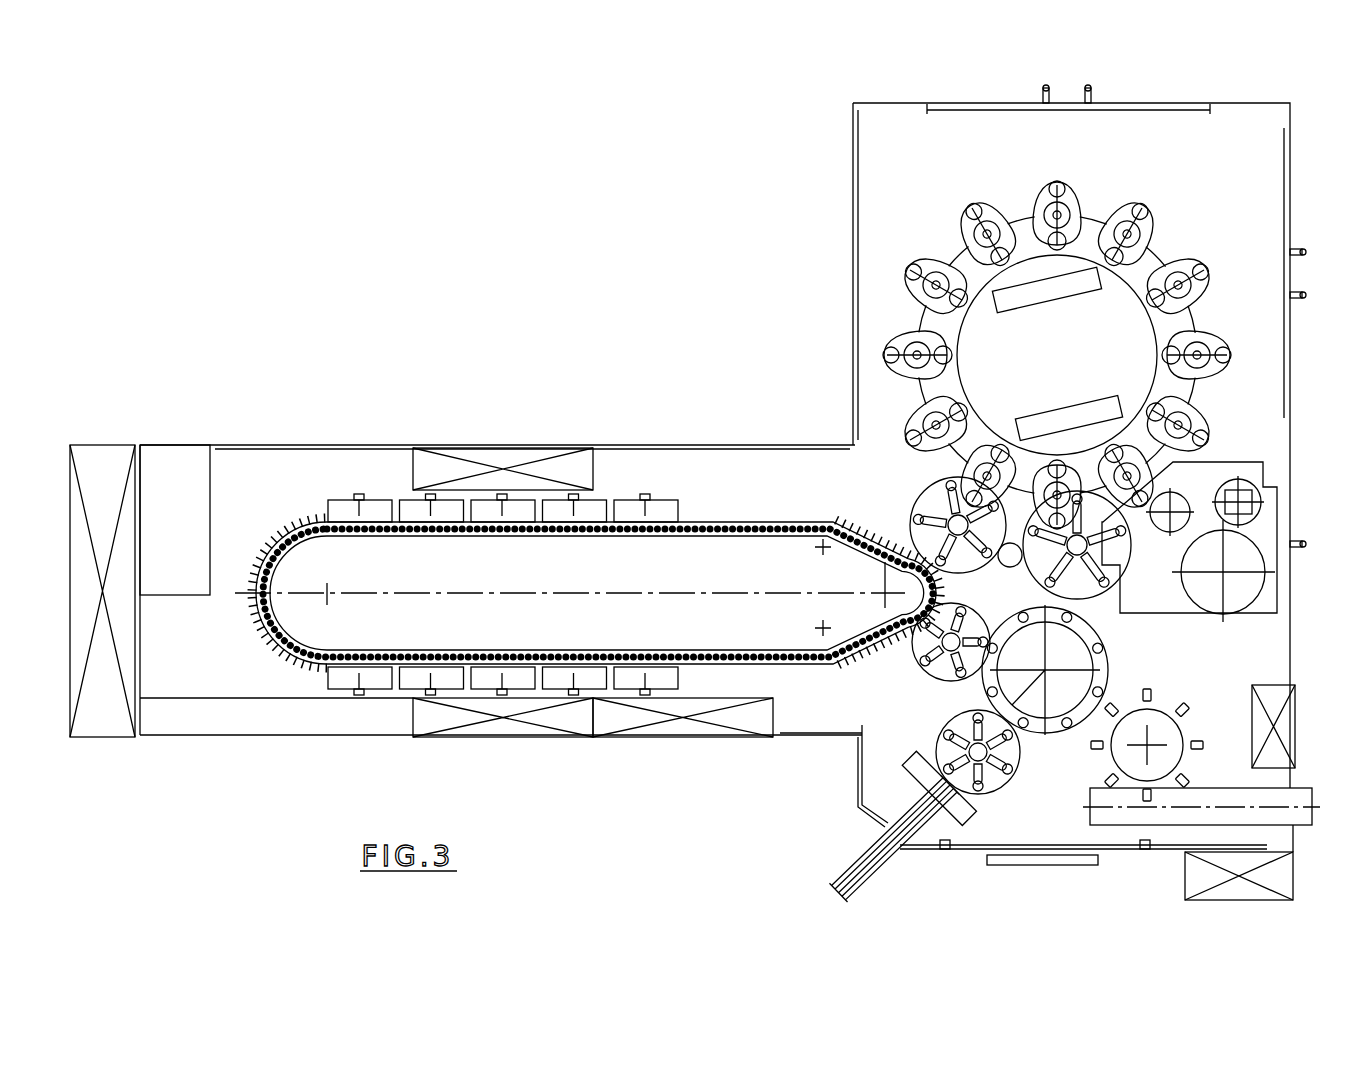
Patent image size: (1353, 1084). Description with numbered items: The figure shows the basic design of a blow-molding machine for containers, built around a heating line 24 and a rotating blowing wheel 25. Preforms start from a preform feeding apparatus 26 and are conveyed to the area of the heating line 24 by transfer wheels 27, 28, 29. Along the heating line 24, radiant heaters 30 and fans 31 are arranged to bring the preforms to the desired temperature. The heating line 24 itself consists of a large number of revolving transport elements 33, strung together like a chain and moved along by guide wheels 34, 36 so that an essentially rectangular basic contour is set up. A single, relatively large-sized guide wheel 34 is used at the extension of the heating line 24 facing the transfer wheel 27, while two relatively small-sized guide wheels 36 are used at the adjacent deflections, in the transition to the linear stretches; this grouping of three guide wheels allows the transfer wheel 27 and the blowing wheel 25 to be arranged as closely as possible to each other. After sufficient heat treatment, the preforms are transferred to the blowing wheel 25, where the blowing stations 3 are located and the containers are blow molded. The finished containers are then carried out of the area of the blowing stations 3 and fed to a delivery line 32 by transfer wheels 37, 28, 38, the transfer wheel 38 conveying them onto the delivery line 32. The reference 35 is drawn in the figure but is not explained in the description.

The blowing stations 3 is at (895, 332).
The heating line 24 is at (632, 478).
The blowing wheel 25 is at (993, 277).
The preform feeding apparatus 26 is at (892, 860).
The transfer wheel 27 is at (990, 793).
The transfer wheel 28 is at (1050, 737).
The transfer wheel 29 is at (930, 665).
The radiant heaters 30 is at (378, 507).
The fans 31 is at (497, 458).
The delivery line 32 is at (1300, 813).
The transport elements 33 is at (295, 657).
The guide wheel 34 is at (327, 595).
The transfer star wheel 35 is at (920, 462).
The guide wheels 36 is at (823, 547).
The transfer wheel 37 is at (1122, 577).
The transfer wheel 38 is at (1157, 760).